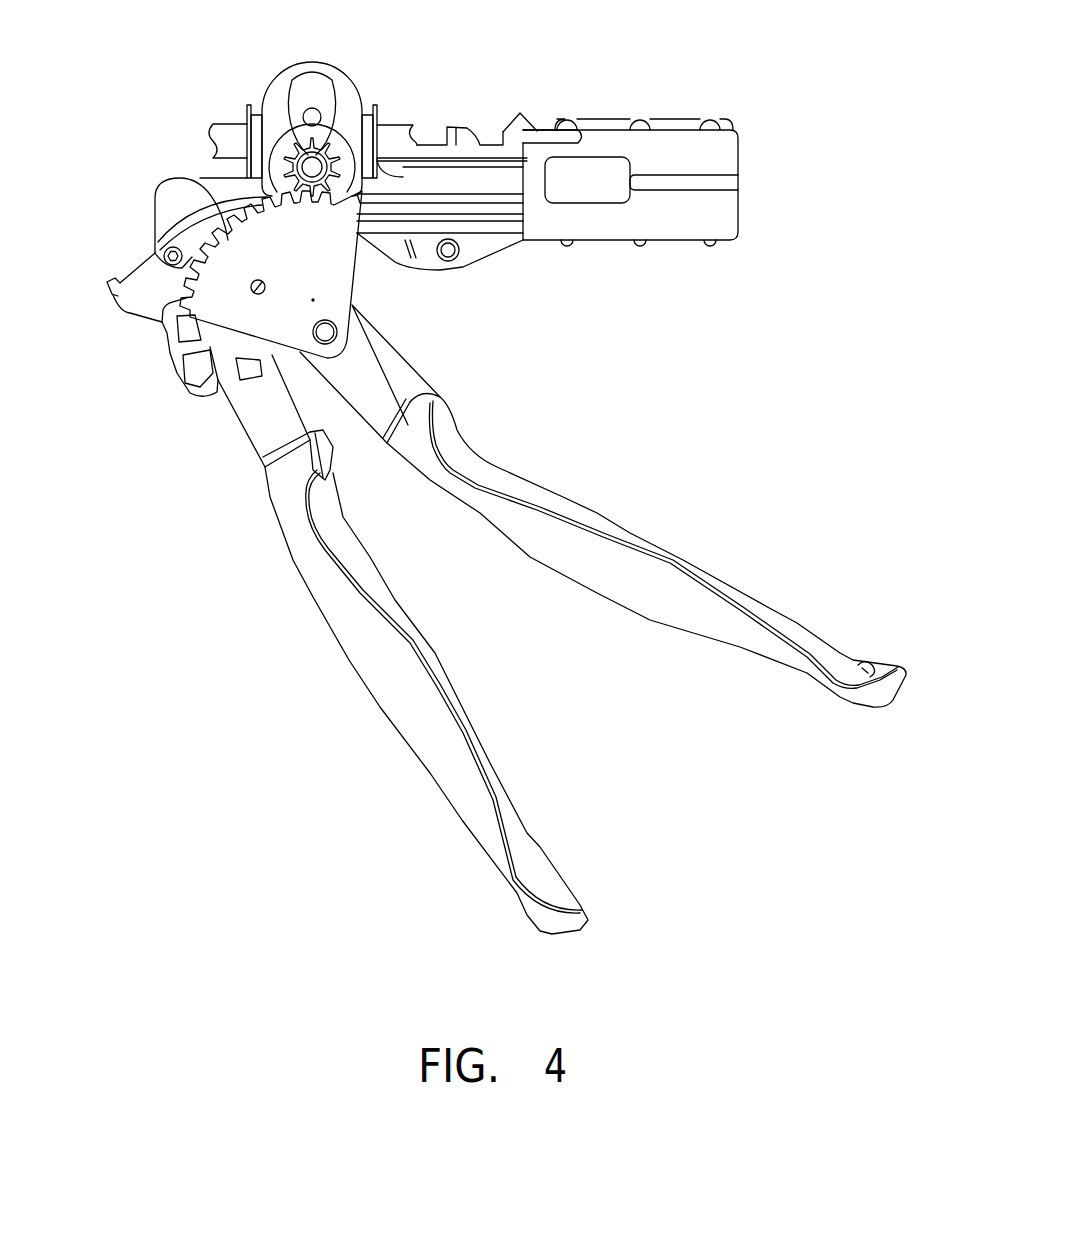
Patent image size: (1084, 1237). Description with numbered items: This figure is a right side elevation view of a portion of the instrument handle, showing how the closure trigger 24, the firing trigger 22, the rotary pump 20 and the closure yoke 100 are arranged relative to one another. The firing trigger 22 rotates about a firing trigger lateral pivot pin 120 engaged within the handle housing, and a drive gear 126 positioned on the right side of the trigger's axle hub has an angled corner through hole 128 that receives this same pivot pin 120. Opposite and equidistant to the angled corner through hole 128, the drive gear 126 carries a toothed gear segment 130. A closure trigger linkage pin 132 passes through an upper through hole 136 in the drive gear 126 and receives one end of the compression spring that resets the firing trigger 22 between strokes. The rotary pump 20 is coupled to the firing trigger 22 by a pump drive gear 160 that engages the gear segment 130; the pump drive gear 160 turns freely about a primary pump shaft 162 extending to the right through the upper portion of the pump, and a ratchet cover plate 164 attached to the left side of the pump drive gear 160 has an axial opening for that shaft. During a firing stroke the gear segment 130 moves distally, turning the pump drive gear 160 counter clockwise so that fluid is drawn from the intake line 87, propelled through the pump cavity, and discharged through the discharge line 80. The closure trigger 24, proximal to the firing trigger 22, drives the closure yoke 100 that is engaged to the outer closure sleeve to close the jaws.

The rotary pump 20 is at (340, 150).
The firing trigger 22 is at (725, 578).
The closure trigger 24 is at (532, 843).
The discharge line 80 is at (393, 133).
The intake line 87 is at (230, 132).
The closure yoke 100 is at (667, 117).
The firing trigger lateral pivot pin 120 is at (332, 332).
The drive gear 126 is at (365, 283).
The angled corner through hole 128 is at (395, 358).
The gear segment 130 is at (225, 240).
The closure trigger linkage pin 132 is at (258, 280).
The upper through hole 136 is at (267, 286).
The pump drive gear 160 is at (292, 68).
The primary pump shaft 162 is at (330, 78).
The ratchet cover plate 164 is at (410, 100).